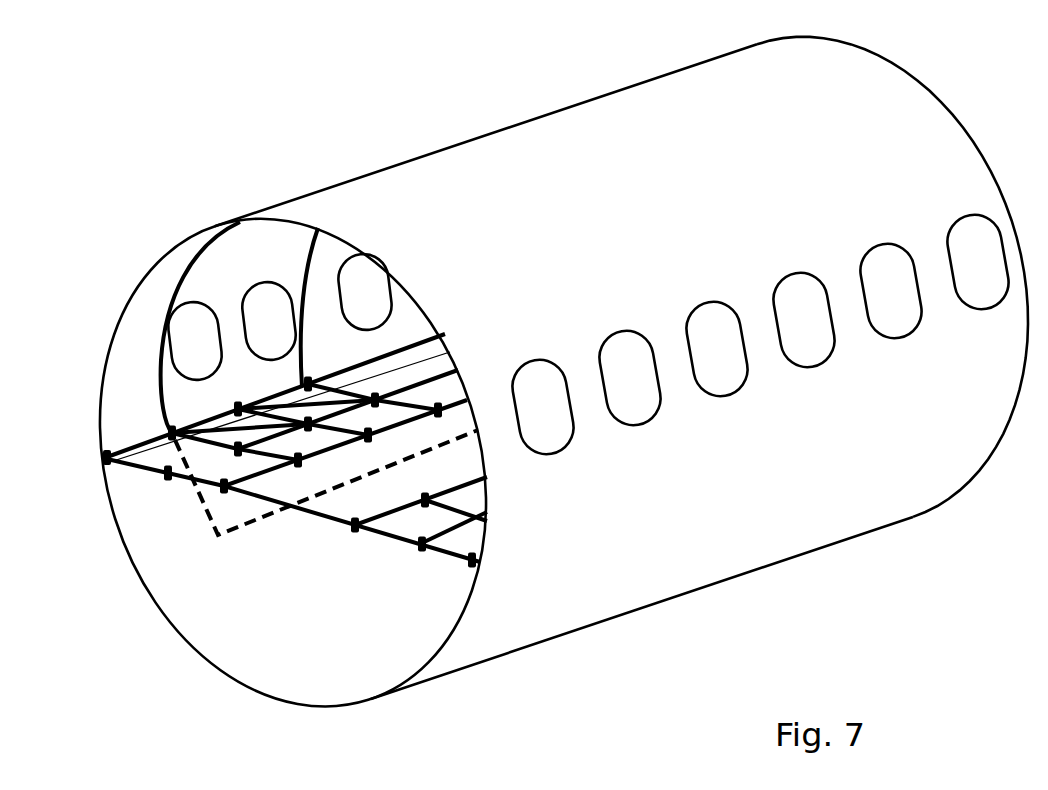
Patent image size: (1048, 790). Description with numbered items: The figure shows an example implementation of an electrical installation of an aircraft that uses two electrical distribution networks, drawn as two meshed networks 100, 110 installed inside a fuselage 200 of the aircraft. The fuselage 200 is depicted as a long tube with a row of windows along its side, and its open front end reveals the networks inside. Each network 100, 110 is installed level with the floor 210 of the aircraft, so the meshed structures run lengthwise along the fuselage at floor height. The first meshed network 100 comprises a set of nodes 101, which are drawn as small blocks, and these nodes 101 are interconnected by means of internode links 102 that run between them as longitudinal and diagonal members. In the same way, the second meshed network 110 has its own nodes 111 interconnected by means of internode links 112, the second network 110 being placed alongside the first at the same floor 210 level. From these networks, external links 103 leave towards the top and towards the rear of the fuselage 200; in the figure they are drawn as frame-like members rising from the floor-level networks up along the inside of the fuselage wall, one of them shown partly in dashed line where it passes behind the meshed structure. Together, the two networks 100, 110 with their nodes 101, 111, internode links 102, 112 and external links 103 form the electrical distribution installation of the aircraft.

The meshed network 100 is at (259, 400).
The nodes 101 is at (165, 482).
The internode links 102 is at (305, 390).
The external links 103 is at (165, 351).
The meshed network 110 is at (388, 565).
The nodes 111 is at (413, 548).
The internode links 112 is at (440, 513).
The fuselage 200 is at (534, 396).
The floor 210 is at (293, 531).